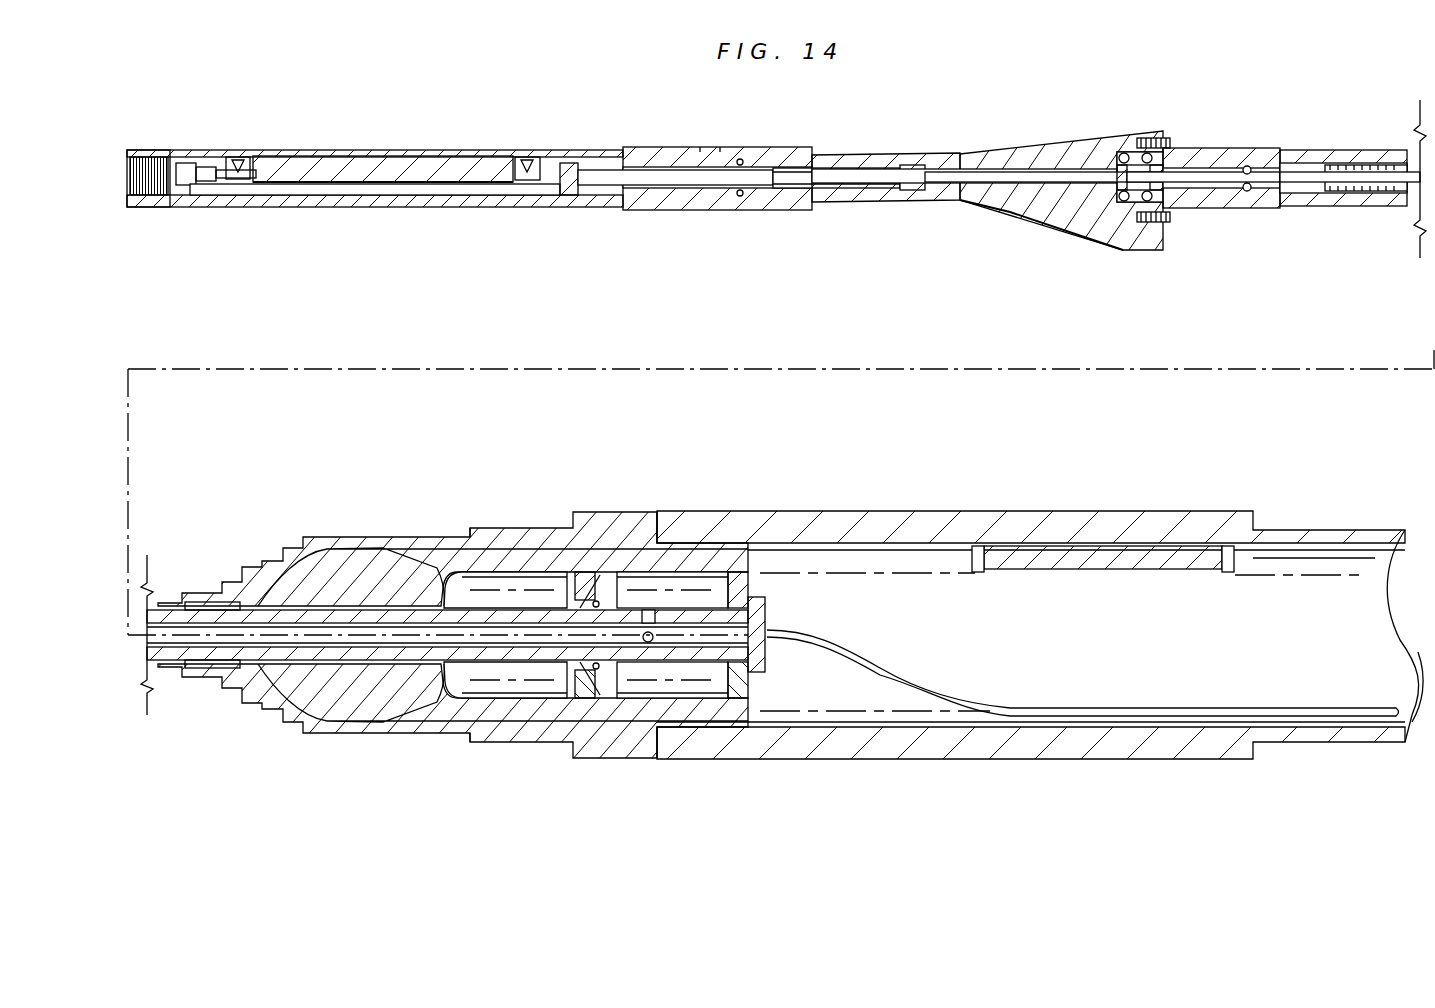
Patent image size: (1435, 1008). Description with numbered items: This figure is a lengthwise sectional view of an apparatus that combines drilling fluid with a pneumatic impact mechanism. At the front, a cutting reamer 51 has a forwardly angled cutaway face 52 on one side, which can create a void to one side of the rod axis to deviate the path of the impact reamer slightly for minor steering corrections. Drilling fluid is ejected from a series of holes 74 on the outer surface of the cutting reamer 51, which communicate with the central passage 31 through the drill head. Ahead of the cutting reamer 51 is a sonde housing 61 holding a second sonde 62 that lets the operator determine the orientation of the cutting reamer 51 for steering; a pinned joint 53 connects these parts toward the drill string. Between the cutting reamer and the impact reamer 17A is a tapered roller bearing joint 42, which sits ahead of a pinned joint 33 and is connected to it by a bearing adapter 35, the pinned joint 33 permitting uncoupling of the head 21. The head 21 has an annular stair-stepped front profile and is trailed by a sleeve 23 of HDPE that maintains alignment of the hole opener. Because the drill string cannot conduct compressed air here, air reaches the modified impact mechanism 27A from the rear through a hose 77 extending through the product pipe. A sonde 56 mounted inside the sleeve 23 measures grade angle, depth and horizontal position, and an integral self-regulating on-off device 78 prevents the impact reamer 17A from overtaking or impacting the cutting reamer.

The second sonde 62 is at (338, 165).
The sonde housing 61 is at (349, 207).
The air passage 31 is at (447, 192).
The pinned joint 53 is at (730, 150).
The cutaway face 52 is at (1047, 144).
The holes 74 is at (987, 205).
The cutting reamer 51 is at (1058, 223).
The bearing adapter 35 is at (1188, 148).
The pinned joint 33 is at (1310, 148).
The tapered roller bearing joint 42 is at (1186, 220).
The impact reamer 17A is at (775, 601).
The head 21 is at (271, 553).
The on-off switch 78 is at (208, 602).
The sleeve 23 is at (951, 512).
The modified impact mechanism 27A is at (548, 672).
The sonde 56 is at (1120, 566).
The hose 77 is at (1039, 700).